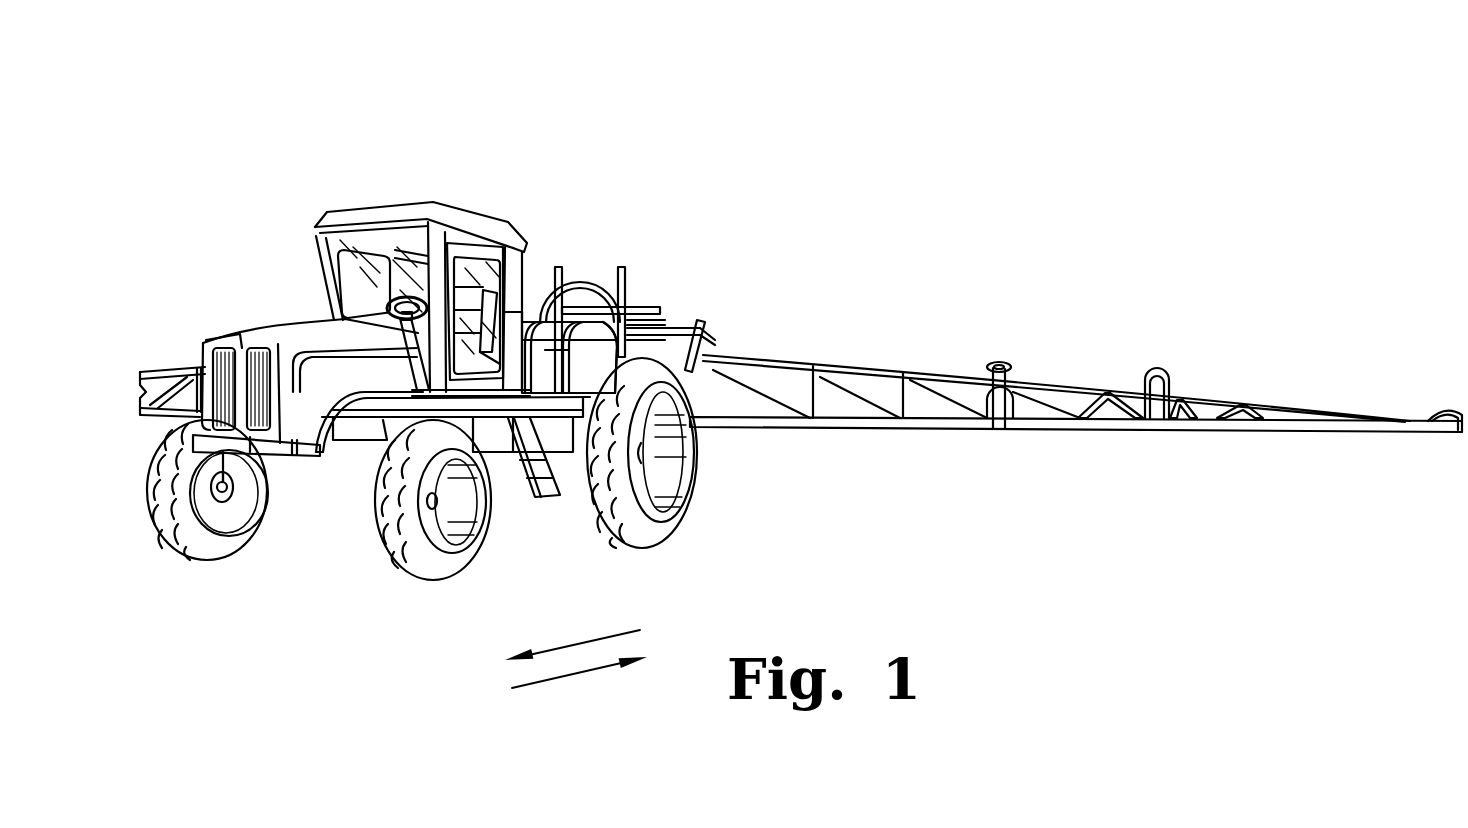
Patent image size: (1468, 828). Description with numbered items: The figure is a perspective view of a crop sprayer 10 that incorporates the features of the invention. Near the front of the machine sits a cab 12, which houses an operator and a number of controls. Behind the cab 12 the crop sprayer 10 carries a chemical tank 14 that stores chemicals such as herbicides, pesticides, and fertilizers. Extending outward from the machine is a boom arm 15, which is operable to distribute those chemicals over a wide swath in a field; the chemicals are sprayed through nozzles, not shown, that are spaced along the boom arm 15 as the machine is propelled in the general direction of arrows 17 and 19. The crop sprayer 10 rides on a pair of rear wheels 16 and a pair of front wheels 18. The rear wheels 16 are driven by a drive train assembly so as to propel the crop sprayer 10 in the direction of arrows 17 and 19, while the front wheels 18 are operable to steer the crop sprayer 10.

The crop sprayer 10 is at (288, 124).
The cab 12 is at (488, 222).
The chemical tank 14 is at (587, 318).
The boom arm 15 is at (928, 370).
The rear wheels 16 is at (663, 533).
The arrow 17 is at (576, 642).
The front wheels 18 is at (457, 558).
The arrow 19 is at (570, 673).